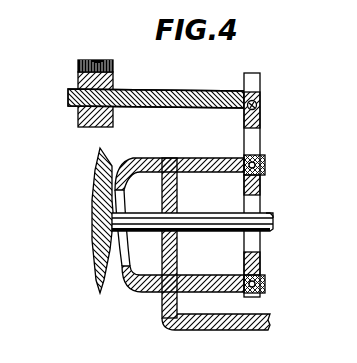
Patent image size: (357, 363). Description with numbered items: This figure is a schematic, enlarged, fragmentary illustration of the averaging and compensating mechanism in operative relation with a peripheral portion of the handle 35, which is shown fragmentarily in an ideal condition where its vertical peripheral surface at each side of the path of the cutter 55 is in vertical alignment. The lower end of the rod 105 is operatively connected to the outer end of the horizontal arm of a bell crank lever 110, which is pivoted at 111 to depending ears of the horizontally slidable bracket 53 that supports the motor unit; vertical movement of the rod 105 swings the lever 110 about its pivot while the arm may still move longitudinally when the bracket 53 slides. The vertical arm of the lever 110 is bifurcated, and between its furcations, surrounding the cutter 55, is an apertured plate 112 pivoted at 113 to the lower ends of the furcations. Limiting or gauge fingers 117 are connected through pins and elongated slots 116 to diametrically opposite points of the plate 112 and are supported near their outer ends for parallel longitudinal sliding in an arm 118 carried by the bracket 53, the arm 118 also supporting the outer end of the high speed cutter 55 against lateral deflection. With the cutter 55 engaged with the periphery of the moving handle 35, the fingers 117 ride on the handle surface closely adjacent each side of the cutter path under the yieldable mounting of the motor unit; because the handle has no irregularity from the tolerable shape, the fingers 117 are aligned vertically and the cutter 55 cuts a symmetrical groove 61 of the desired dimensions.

The rod 105 is at (79, 63).
The horizontally slidable bracket 53 is at (252, 80).
The pivot 111 is at (257, 104).
The bell crank lever 110 is at (262, 114).
The pins and elongated slots 116 is at (262, 163).
The apertured plate 112 is at (262, 263).
The handle 35 is at (96, 179).
The groove 61 is at (129, 243).
The limiting or gauge fingers 117 is at (201, 276).
The cutter 55 is at (272, 213).
The pivot 113 is at (276, 222).
The arm 118 is at (186, 327).